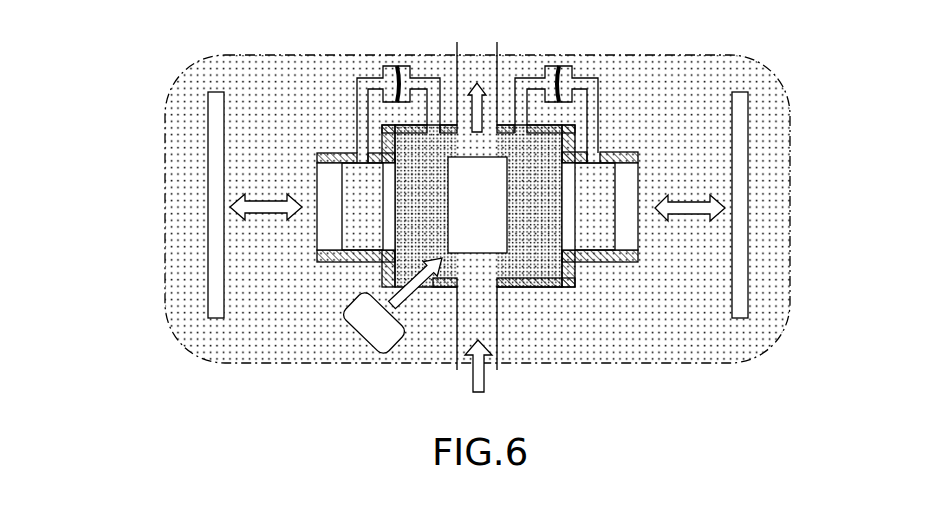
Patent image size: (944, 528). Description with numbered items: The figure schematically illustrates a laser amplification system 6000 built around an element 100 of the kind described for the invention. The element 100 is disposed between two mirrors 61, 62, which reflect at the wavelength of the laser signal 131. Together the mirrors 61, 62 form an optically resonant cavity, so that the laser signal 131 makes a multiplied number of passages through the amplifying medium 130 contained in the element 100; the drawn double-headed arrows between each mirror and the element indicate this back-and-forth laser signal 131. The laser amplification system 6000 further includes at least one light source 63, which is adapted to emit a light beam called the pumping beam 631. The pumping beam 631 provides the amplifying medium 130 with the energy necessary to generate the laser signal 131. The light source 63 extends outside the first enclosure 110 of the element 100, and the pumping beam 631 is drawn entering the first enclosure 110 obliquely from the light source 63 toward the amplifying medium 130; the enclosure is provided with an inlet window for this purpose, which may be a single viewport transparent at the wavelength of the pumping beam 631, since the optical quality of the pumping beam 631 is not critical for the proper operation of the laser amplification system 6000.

The laser amplification system 6000 is at (142, 82).
The element 100 is at (344, 91).
The mirror 61 is at (213, 192).
The mirror 62 is at (740, 192).
The laser signal 131 is at (240, 213).
The first enclosure 110 is at (547, 287).
The amplifying medium 130 is at (496, 242).
The light source 63 is at (370, 335).
The pumping beam 631 is at (400, 296).